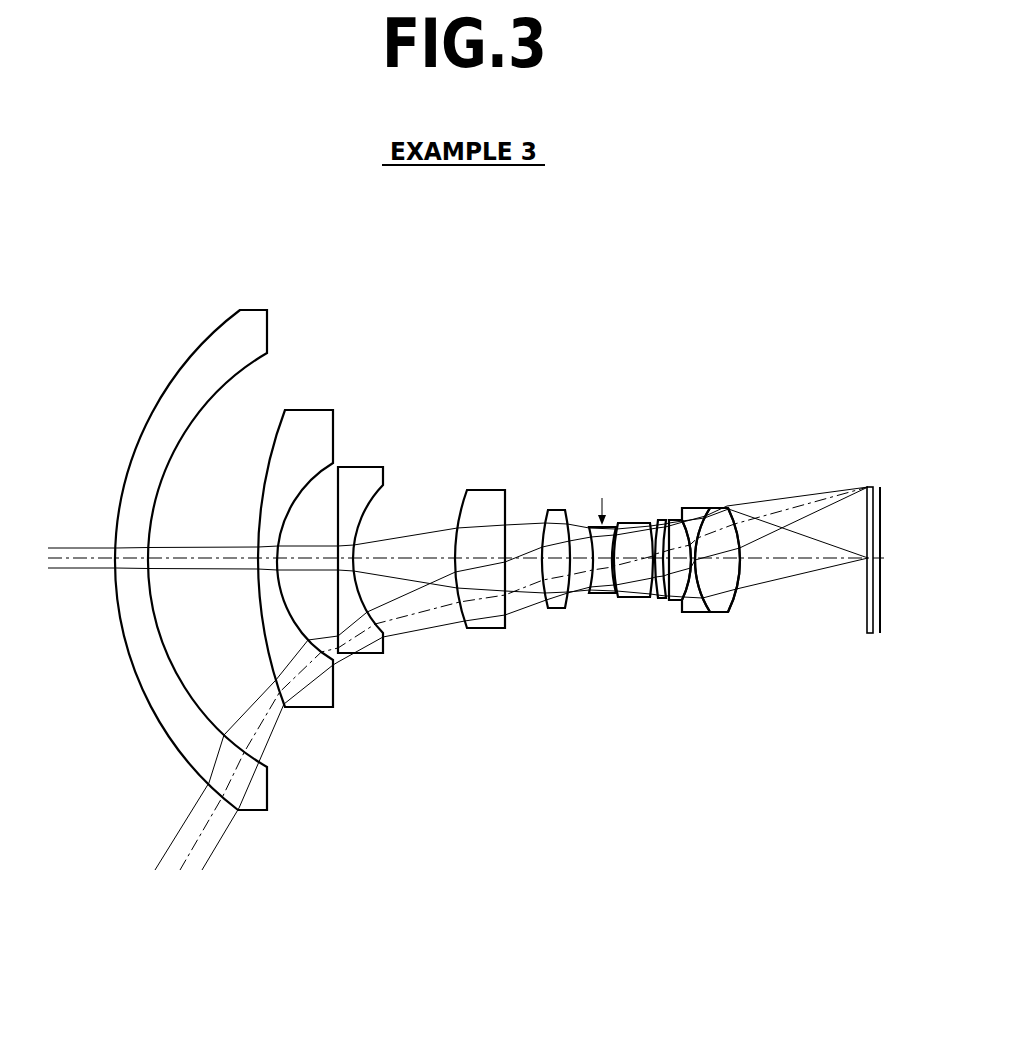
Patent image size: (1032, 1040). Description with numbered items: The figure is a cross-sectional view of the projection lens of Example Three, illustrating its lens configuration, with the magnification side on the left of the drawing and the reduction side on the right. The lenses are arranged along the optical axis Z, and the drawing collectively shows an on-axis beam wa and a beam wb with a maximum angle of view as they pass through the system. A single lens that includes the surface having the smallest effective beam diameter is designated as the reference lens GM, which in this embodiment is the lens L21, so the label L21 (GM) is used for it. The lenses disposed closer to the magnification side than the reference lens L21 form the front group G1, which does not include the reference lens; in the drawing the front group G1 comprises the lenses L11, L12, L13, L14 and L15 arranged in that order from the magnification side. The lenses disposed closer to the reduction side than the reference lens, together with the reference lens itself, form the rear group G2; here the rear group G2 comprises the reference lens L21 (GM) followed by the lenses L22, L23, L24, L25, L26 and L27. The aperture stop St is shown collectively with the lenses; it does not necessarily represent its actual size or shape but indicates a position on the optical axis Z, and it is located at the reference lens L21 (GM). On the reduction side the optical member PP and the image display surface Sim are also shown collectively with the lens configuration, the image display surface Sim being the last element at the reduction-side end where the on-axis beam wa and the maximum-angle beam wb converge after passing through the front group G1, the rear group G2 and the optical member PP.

The first lens of first lens group L11 is at (250, 317).
The second lens of first lens group L12 is at (302, 417).
The third lens of first lens group L13 is at (363, 472).
The fourth lens of first lens group L14 is at (484, 498).
The fifth lens of first lens group L15 is at (557, 512).
The reference lens L21 is at (612, 527).
The reference lens GM is at (591, 422).
The second lens of second lens group L22 is at (632, 522).
The third lens of second lens group L23 is at (657, 520).
The fourth lens of second lens group L24 is at (667, 520).
The fifth lens of second lens group L25 is at (675, 520).
The sixth lens of second lens group L26 is at (699, 508).
The seventh lens of second lens group L27 is at (720, 507).
The front group G1 is at (478, 247).
The rear group G2 is at (882, 247).
The aperture stop St is at (602, 600).
The optical member PP is at (866, 630).
The image display surface Sim is at (880, 634).
The optical axis Z is at (70, 556).
The on-axis beam wa is at (65, 572).
The beam with a maximum angle of view wb is at (238, 841).